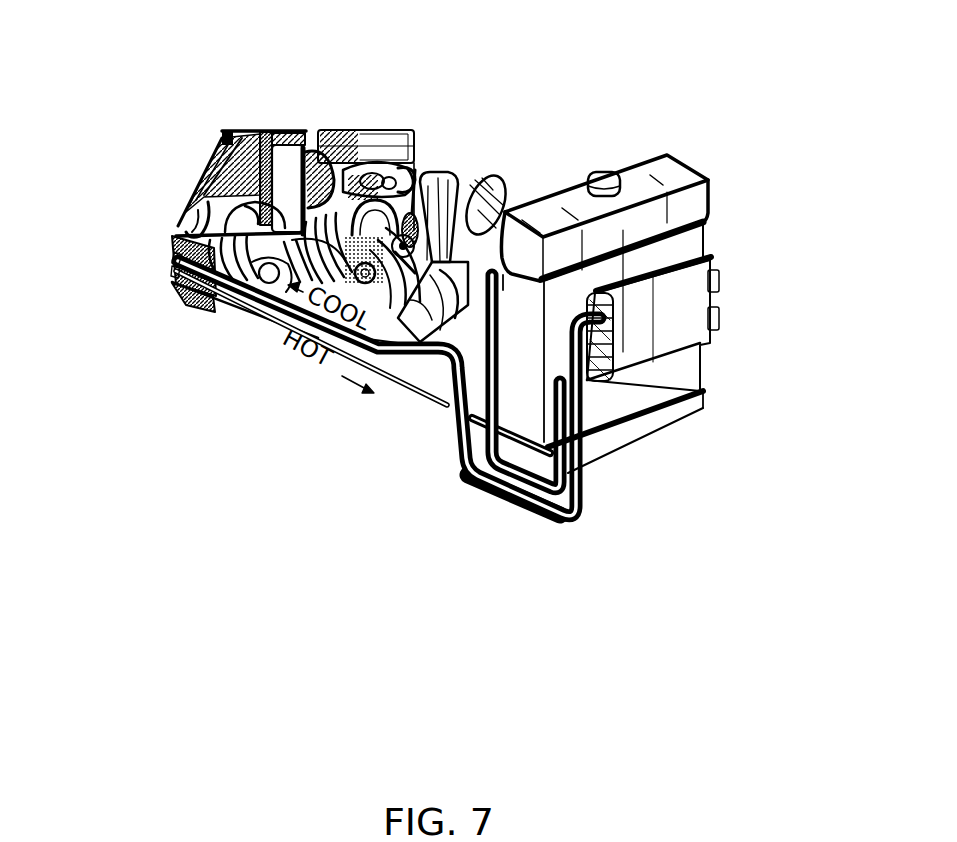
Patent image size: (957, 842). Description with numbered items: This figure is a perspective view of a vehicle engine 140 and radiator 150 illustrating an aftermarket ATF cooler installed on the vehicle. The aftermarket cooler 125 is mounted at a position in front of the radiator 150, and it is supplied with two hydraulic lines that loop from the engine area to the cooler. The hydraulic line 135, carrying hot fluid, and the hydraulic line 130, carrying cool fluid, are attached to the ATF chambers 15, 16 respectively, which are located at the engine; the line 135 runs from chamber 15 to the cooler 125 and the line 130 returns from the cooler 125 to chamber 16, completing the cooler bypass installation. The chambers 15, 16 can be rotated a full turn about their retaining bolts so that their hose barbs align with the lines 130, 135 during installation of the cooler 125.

The engine 140 is at (380, 107).
The radiator 150 is at (602, 146).
The aftermarket cooler 125 is at (708, 353).
The hydraulic line (COOL) 130 is at (462, 459).
The hydraulic line (HOT) 135 is at (272, 325).
The ATF chamber 16 is at (172, 250).
The ATF chamber 15 is at (172, 267).